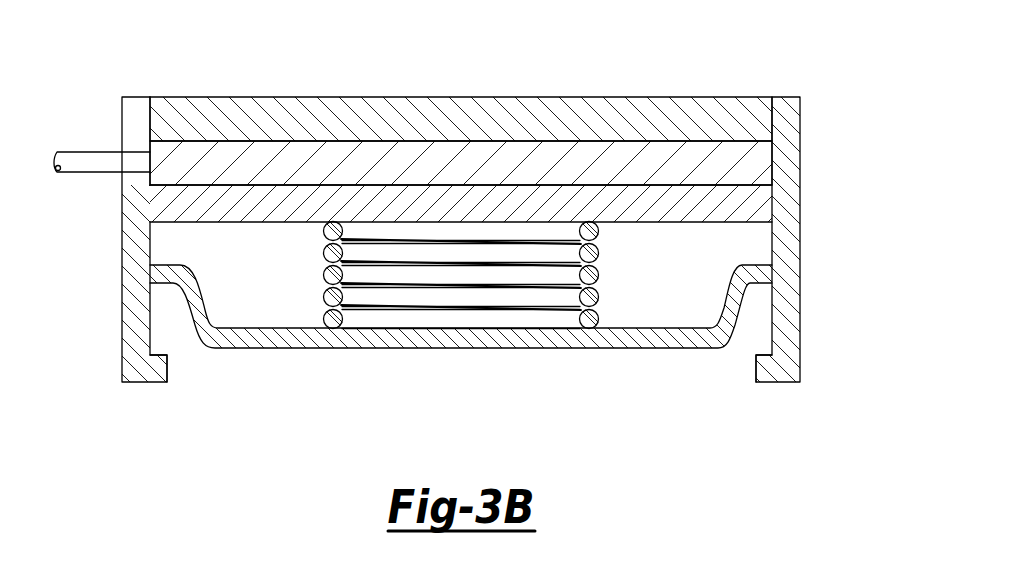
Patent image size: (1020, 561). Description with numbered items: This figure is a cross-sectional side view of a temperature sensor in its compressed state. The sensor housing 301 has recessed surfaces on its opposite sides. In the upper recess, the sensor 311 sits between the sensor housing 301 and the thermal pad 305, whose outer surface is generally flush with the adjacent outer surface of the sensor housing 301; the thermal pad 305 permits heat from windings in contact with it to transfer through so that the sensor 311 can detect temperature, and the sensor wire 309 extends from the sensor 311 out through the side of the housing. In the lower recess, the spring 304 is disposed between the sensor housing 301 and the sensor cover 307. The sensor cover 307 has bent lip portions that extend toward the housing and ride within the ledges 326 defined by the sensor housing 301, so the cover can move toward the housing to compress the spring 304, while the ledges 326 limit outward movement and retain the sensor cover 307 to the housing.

The sensor housing 301 is at (790, 216).
The spring 304 is at (598, 273).
The thermal pad 305 is at (433, 110).
The sensor cover 307 is at (440, 343).
The sensor wire 309 is at (83, 162).
The sensor 311 is at (753, 164).
The ledges 326 is at (163, 352).